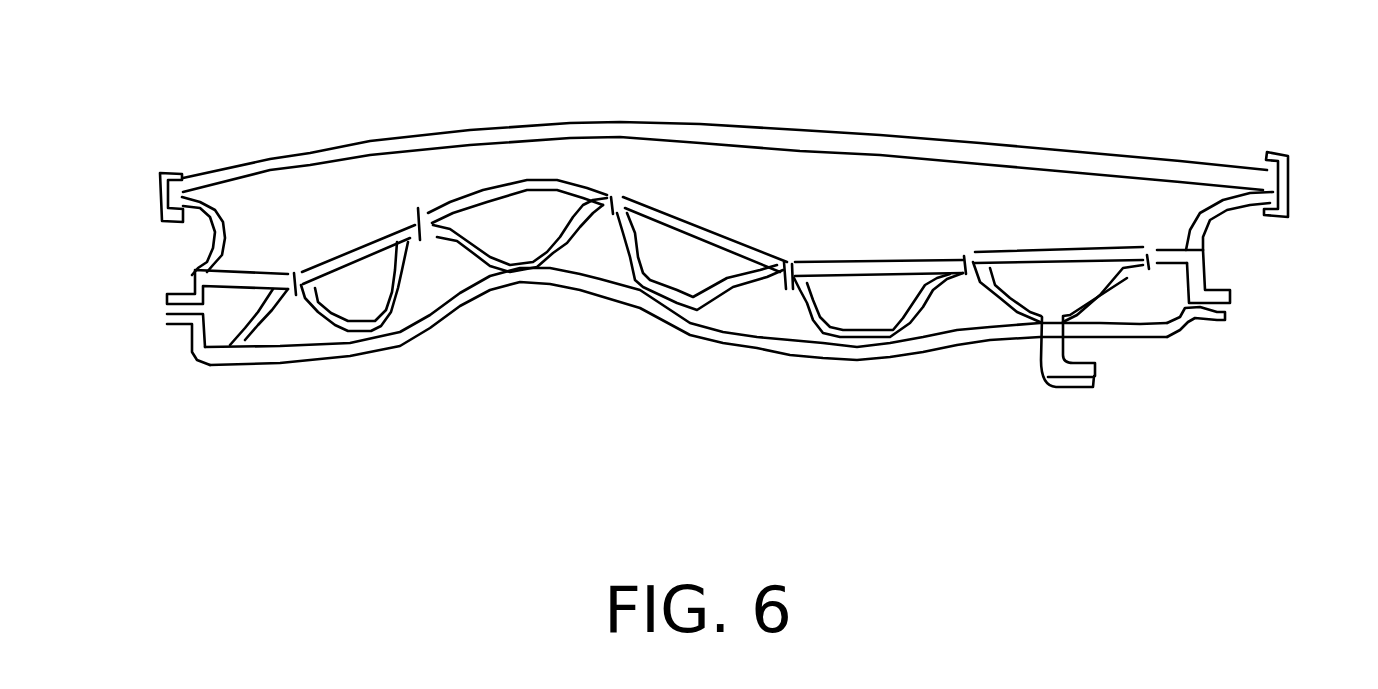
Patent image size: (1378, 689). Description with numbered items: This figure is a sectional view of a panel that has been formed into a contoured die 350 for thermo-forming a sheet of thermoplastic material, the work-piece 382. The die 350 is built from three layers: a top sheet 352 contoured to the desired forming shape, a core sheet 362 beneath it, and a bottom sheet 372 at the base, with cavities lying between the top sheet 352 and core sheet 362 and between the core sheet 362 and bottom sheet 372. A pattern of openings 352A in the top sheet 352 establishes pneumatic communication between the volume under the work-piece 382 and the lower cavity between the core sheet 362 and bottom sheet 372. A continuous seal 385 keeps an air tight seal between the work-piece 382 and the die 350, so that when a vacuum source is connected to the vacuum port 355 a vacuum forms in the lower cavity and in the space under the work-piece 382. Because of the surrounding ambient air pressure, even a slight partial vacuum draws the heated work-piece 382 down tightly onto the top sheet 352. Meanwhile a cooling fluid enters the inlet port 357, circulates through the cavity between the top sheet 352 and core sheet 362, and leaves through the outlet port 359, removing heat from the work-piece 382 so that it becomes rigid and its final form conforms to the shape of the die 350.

The contoured die 350 is at (170, 422).
The work-piece 382 is at (840, 133).
The continuous seal 385 is at (1277, 150).
The top sheet 352 is at (707, 228).
The pattern of openings 352A is at (418, 240).
The core sheet 362 is at (823, 307).
The inlet port 357 is at (150, 307).
The vacuum port 355 is at (1240, 312).
The outlet port 359 is at (1098, 373).
The bottom sheet 372 is at (782, 362).